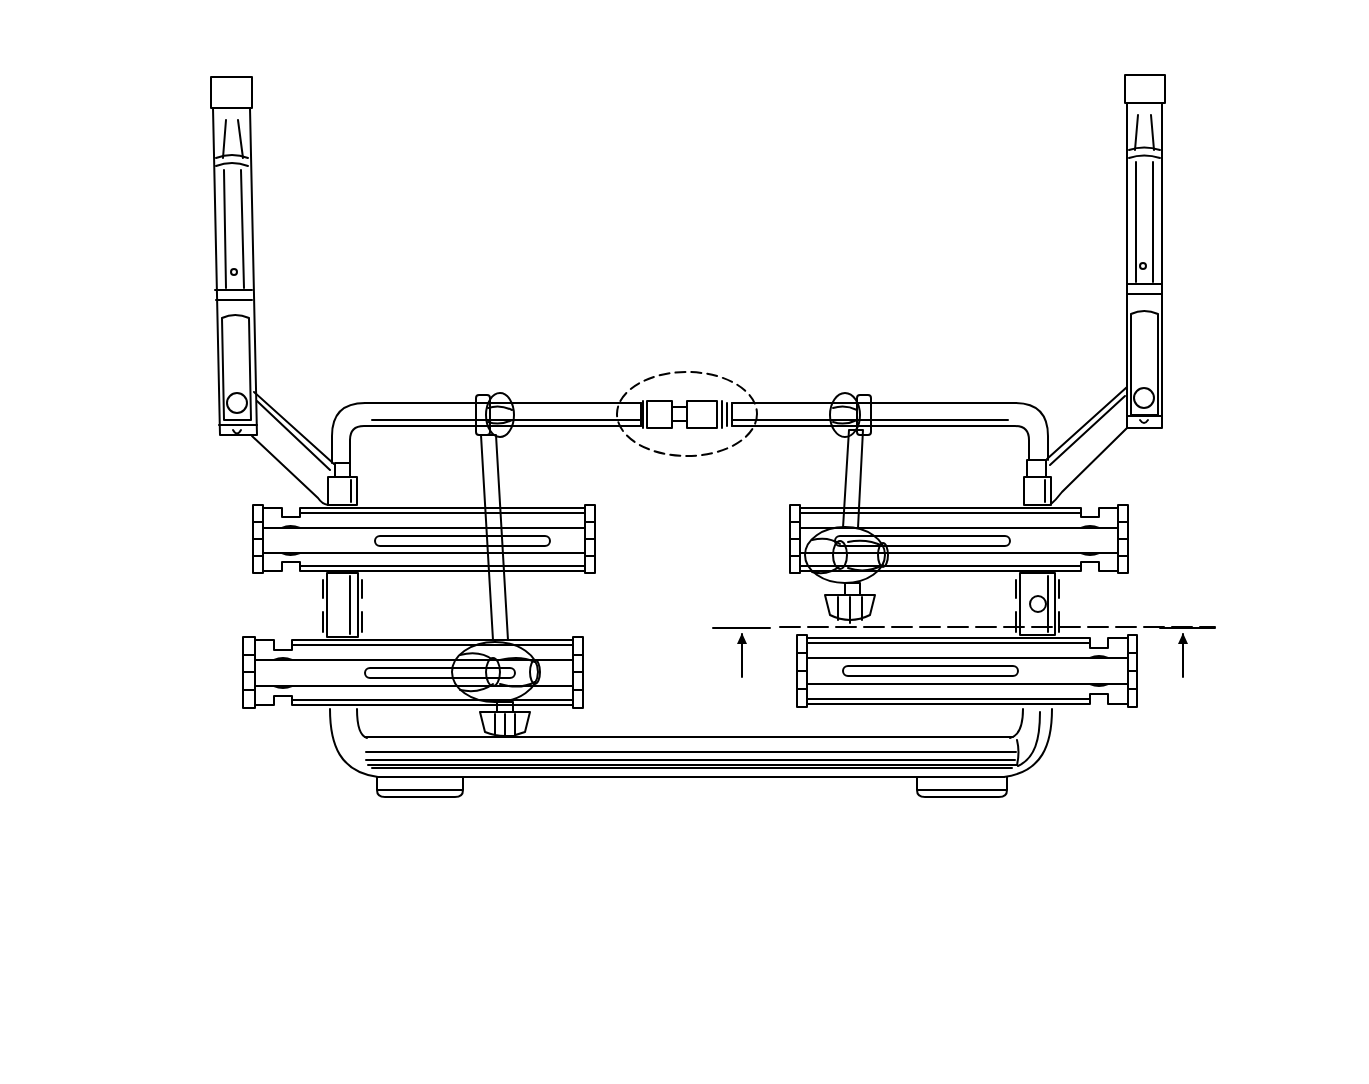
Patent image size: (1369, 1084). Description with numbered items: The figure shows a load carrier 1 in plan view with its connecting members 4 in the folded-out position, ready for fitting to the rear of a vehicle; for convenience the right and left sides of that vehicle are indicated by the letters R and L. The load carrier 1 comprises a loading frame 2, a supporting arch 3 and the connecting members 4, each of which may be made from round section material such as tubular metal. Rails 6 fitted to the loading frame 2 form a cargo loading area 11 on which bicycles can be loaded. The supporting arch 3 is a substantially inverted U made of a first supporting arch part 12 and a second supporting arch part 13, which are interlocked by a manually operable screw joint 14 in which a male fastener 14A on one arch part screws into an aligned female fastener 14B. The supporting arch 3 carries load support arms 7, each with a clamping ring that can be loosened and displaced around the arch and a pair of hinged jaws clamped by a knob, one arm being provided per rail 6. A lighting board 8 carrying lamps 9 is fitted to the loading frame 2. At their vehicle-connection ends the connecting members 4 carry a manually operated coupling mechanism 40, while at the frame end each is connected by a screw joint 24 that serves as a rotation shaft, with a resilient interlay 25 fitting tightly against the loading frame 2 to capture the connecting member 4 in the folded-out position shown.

The load carrier 1 is at (672, 278).
The loading frame 2 is at (1028, 723).
The supporting arch 3 is at (494, 338).
The connecting members 4 is at (285, 424).
The rails 6 is at (273, 554).
The load support arms 7 is at (852, 486).
The lighting board 8 is at (681, 757).
The lamps 9 is at (407, 780).
The cargo loading area 11 is at (180, 577).
The first supporting arch part 12 is at (970, 412).
The second supporting arch part 13 is at (427, 415).
The screw joint 14 is at (715, 373).
The male fastener 14A is at (657, 418).
The female fastener 14B is at (703, 418).
The screw joint 24 is at (348, 582).
The interlay 25 is at (340, 583).
The coupling mechanism 40 is at (255, 237).